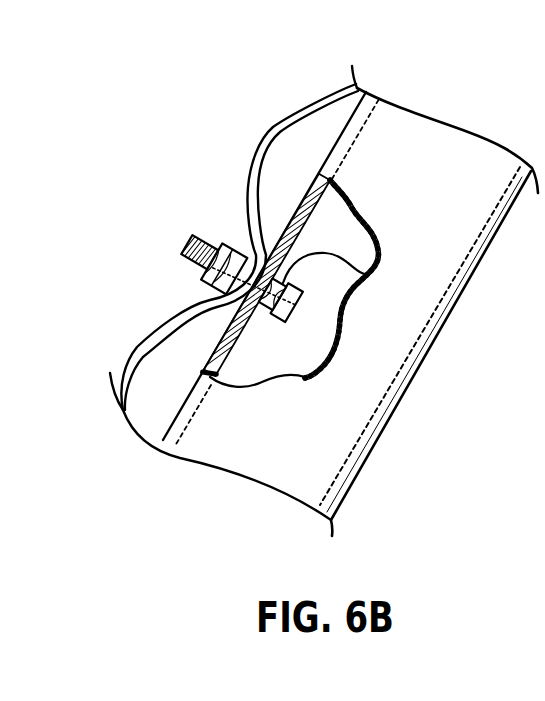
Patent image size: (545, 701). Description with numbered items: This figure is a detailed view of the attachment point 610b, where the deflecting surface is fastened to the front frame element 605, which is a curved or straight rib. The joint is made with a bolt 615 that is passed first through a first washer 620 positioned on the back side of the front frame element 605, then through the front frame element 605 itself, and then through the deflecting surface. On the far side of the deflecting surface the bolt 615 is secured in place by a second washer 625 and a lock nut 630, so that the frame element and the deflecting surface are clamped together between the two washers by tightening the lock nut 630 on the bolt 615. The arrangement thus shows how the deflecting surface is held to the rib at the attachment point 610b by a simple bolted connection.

The front frame element 605 is at (457, 152).
The attachment point 610b is at (270, 348).
The bolt 615 is at (294, 320).
The first washer 620 is at (365, 274).
The second washer 625 is at (216, 292).
The lock nut 630 is at (207, 240).